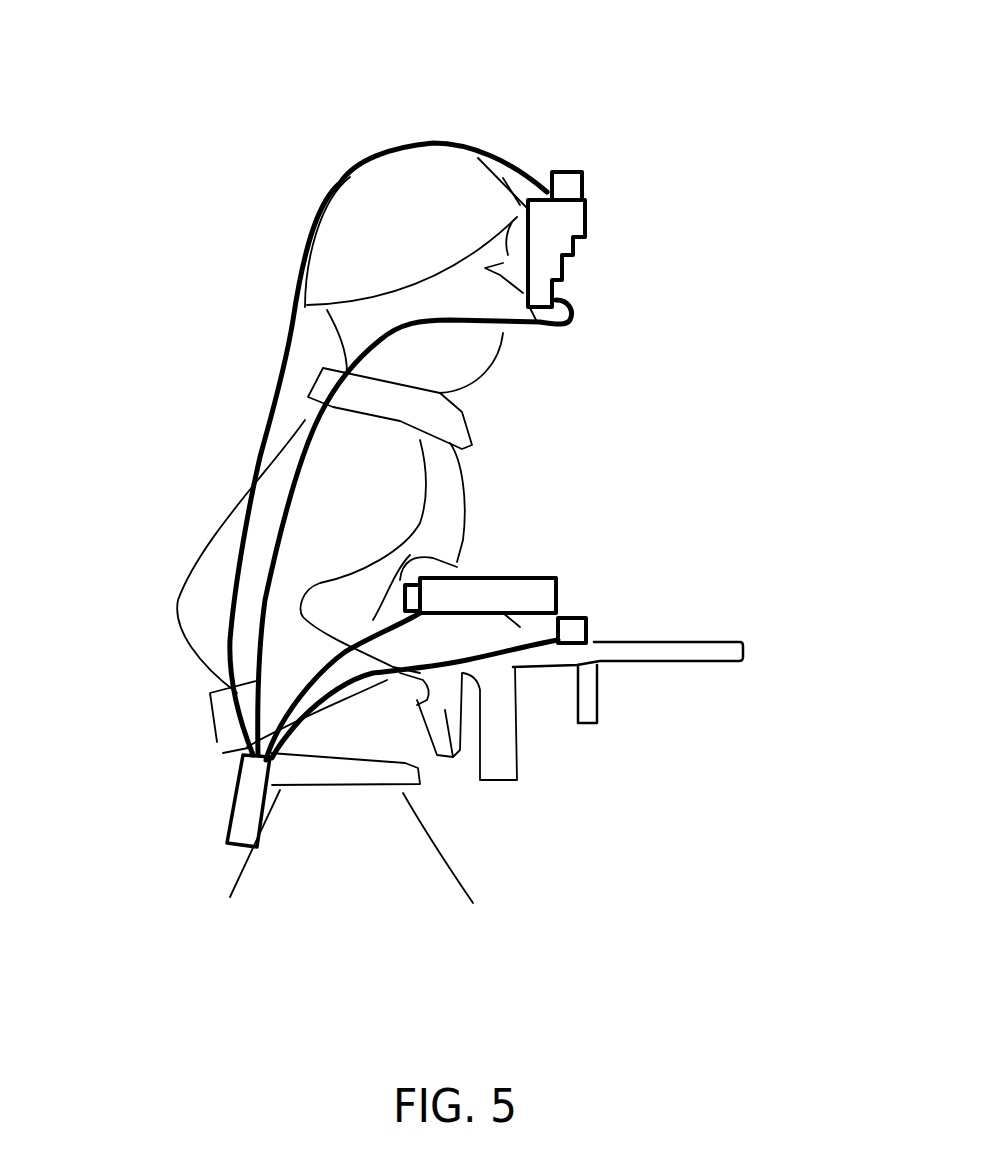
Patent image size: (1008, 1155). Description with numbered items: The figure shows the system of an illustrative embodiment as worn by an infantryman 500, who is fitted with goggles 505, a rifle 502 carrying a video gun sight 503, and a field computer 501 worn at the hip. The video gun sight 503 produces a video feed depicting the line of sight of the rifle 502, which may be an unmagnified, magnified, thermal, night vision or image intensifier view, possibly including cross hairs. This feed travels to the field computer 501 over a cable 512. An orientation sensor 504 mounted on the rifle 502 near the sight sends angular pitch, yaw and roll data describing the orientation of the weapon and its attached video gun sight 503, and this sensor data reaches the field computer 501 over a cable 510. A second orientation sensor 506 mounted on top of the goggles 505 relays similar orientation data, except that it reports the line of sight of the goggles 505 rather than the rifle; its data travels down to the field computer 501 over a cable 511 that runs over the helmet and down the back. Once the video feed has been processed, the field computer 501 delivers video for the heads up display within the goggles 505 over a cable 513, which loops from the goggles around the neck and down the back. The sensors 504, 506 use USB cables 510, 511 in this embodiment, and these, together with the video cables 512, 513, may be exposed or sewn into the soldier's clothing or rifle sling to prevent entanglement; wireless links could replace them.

The infantryman 500 is at (514, 63).
The field computer 501 is at (238, 790).
The rifle 502 is at (600, 680).
The video gun sight 503 is at (528, 578).
The orientation sensor 504 is at (580, 617).
The goggles 505 is at (587, 237).
The orientation sensor 506 is at (582, 185).
The cable 510 is at (478, 658).
The cable 511 is at (308, 237).
The cable 512 is at (457, 565).
The cable 513 is at (545, 326).